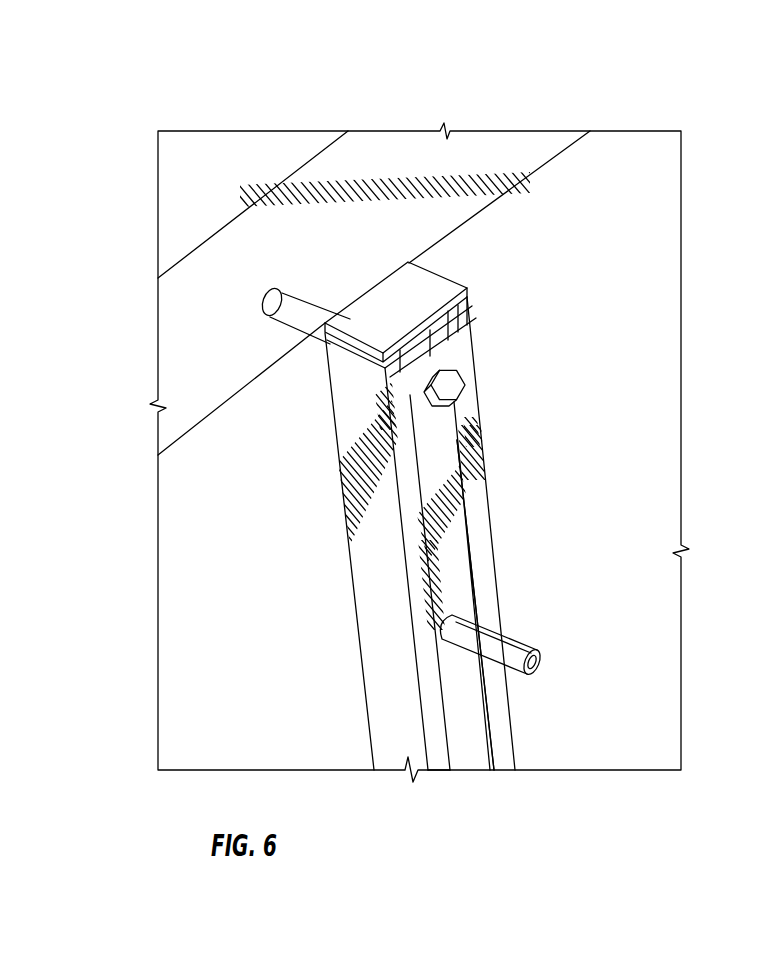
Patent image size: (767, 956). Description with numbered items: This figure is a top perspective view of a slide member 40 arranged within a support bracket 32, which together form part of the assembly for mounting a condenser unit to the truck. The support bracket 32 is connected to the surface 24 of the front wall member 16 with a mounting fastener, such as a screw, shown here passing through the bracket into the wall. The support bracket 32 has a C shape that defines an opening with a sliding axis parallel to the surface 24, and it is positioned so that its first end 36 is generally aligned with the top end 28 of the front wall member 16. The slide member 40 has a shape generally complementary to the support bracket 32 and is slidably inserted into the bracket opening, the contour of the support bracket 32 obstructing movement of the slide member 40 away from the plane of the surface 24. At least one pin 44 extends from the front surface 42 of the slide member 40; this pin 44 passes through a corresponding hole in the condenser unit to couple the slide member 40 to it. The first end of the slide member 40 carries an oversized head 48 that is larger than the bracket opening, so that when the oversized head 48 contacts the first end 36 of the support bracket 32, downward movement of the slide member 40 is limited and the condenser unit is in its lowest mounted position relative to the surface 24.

The front wall member 16 is at (590, 70).
The top end 28 is at (362, 160).
The surface 24 is at (633, 383).
The first end 36 is at (470, 300).
The oversized head 48 is at (367, 312).
The support bracket 32 is at (485, 535).
The pin 44 is at (515, 646).
The front surface 42 is at (475, 733).
The slide member 40 is at (469, 768).
The mounting fastener is at (440, 390).